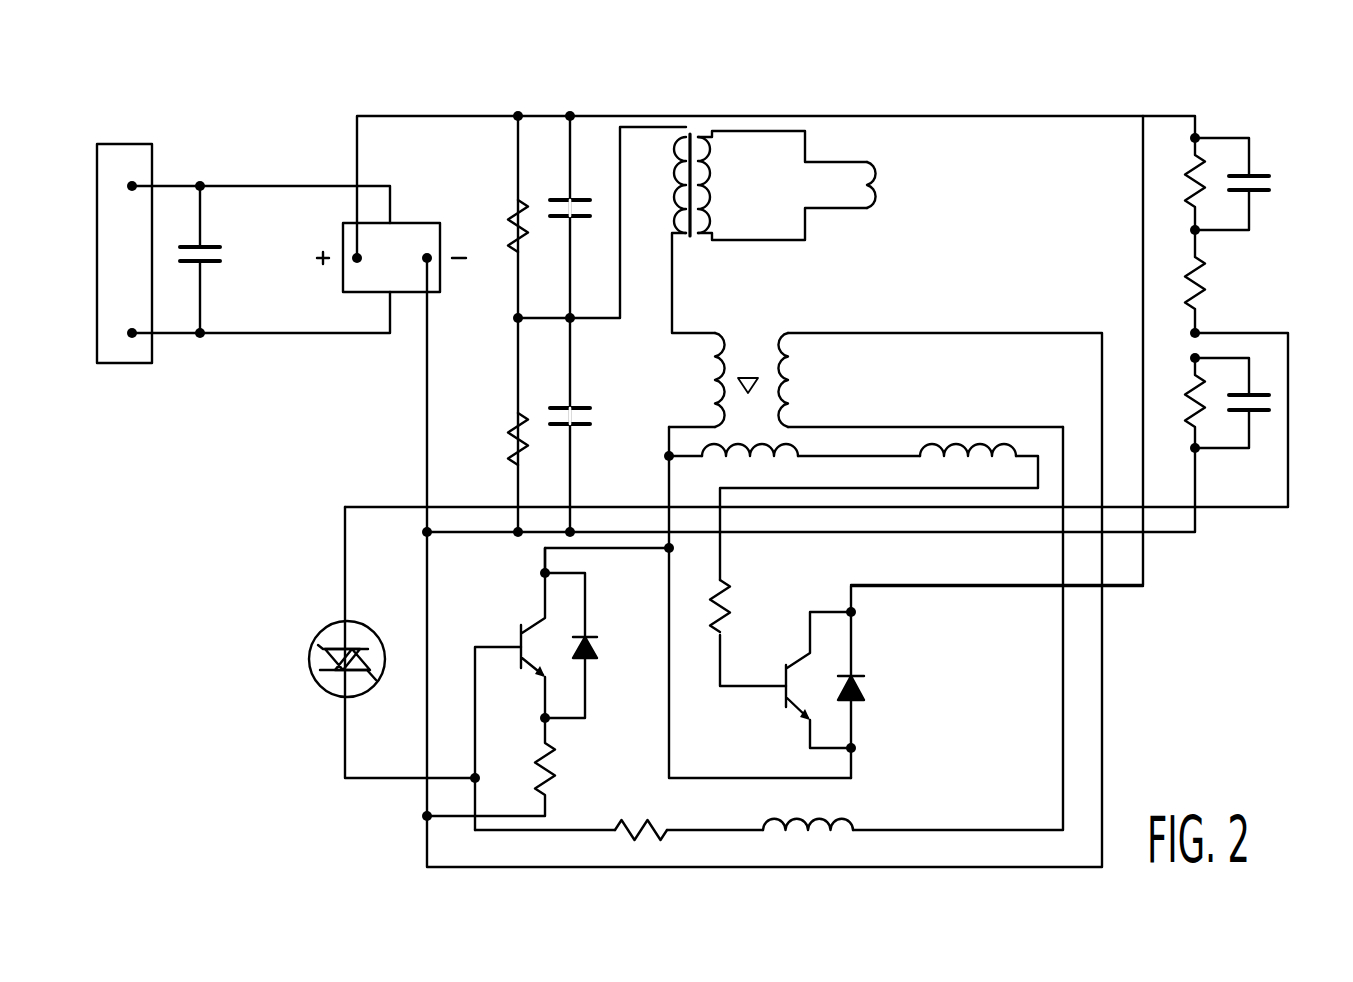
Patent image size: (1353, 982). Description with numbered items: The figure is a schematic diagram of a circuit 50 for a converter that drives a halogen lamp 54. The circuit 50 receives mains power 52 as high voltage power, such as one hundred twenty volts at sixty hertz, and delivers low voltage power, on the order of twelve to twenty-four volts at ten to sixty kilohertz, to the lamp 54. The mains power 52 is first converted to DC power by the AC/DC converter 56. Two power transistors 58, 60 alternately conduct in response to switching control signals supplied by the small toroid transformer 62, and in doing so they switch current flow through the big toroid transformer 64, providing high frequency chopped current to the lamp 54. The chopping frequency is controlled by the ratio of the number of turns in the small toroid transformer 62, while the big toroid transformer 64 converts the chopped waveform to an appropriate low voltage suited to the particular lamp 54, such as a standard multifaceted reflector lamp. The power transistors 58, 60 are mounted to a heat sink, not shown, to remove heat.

The circuit 50 is at (868, 101).
The mains power 52 is at (119, 144).
The lamp 54 is at (882, 173).
The AC/DC converter 56 is at (410, 285).
The power transistor 58 is at (601, 674).
The power transistor 60 is at (869, 707).
The small toroid transformer 62 is at (733, 335).
The big toroid transformer 64 is at (687, 130).